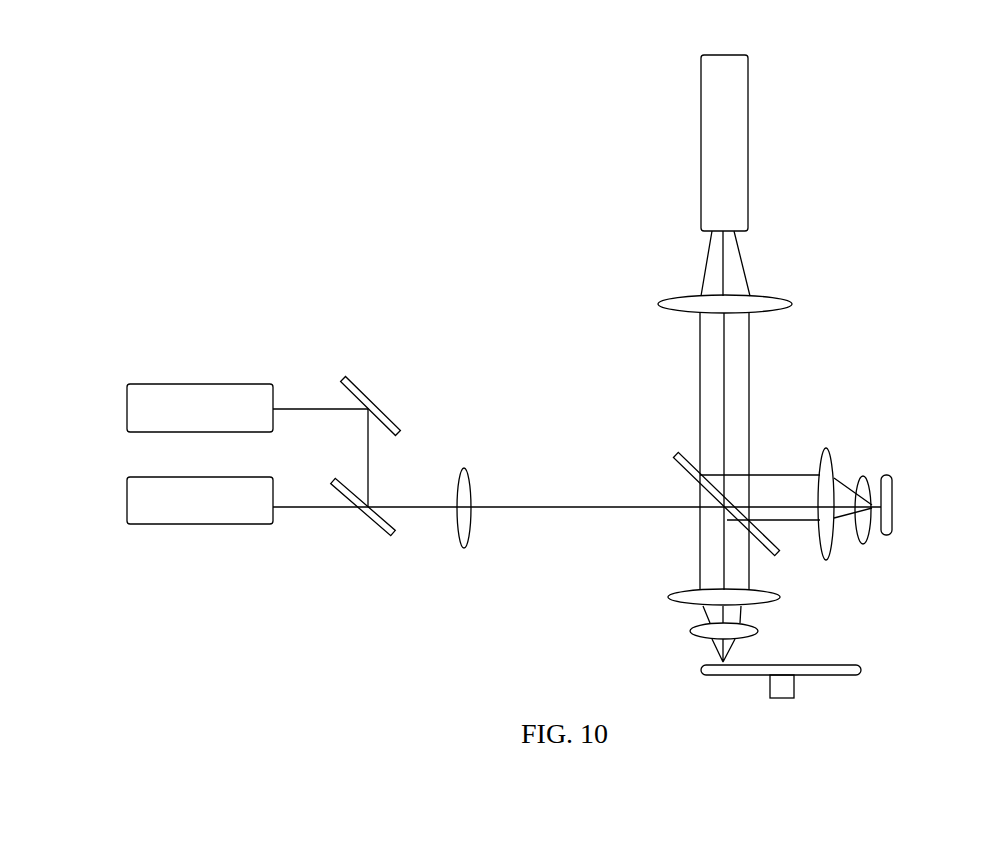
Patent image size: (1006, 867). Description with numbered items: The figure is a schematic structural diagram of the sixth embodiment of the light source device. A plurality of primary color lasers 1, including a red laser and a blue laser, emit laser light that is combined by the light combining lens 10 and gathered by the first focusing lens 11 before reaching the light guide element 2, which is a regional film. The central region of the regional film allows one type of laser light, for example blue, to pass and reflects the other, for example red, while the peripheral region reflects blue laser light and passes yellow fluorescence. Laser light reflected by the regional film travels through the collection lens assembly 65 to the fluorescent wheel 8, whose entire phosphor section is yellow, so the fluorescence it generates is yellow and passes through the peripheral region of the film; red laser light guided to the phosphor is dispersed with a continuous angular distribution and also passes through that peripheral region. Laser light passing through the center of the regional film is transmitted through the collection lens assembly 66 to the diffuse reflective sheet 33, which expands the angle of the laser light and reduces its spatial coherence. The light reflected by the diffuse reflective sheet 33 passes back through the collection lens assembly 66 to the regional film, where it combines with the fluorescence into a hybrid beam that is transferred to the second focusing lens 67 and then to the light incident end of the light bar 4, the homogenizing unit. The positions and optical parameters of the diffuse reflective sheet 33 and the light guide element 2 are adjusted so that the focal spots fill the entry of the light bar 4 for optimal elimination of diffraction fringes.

The primary color lasers 1 is at (122, 496).
The light guide element 2 is at (669, 470).
The light bar 4 is at (752, 142).
The fluorescent wheel 8 is at (864, 663).
The light combining lens 10 is at (362, 382).
The first focusing lens 11 is at (463, 547).
The diffuse reflective sheet 33 is at (894, 497).
The collection lens assembly 65 is at (693, 635).
The collection lens assembly 66 is at (867, 474).
The second focusing lens 67 is at (652, 304).